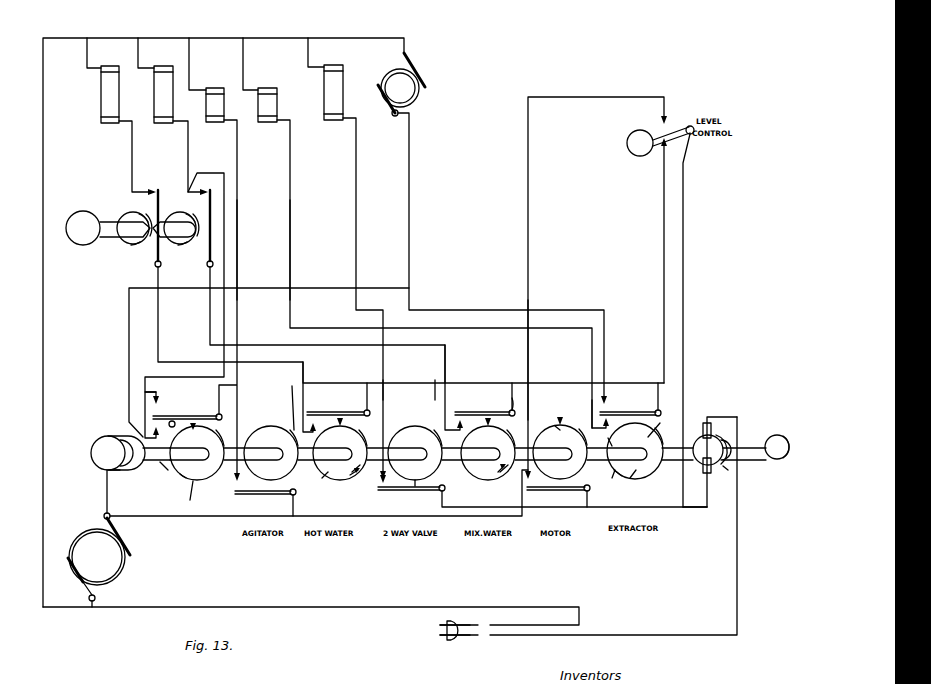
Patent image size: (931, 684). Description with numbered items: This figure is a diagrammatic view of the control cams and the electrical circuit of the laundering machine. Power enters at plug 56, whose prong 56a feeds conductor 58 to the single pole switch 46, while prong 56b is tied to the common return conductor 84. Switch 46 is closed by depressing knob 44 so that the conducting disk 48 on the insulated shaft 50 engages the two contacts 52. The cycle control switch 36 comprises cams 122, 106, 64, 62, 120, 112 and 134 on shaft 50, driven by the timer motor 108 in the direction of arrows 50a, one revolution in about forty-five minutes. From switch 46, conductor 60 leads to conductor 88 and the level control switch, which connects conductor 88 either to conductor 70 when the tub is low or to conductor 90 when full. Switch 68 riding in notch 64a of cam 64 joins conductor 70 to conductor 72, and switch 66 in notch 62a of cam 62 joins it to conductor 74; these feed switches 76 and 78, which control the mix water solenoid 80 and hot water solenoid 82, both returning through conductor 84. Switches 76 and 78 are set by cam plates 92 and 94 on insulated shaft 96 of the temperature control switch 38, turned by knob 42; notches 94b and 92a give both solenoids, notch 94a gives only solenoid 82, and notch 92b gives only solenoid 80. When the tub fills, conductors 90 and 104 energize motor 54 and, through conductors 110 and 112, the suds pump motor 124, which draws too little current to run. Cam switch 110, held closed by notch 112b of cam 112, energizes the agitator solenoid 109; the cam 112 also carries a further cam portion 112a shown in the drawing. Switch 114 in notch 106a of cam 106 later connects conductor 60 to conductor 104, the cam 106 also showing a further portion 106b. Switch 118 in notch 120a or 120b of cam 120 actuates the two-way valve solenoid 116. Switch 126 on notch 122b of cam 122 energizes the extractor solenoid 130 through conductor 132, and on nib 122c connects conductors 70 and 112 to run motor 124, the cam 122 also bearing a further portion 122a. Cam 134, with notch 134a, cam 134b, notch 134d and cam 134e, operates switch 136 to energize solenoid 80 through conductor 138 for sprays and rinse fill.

The cycle control switch 36 is at (698, 413).
The temperature control switch 38 is at (86, 247).
The knob 42 is at (62, 226).
The knob 44 is at (778, 434).
The single pole switch 46 is at (724, 470).
The conducting disk 48 is at (732, 458).
The insulated shaft 50 is at (744, 436).
The arrows 50a is at (433, 484).
The contacts 52 is at (710, 422).
The motor 54 is at (122, 571).
The plug 56 is at (453, 640).
The prong 56a is at (440, 637).
The prong 56b is at (440, 626).
The conductor 58 is at (640, 630).
The conductor 60 is at (690, 512).
The cam 62 is at (322, 474).
The notch 62a is at (370, 420).
The cam 64 is at (474, 478).
The notch 64a is at (516, 402).
The switch 66 is at (348, 414).
The switch 68 is at (470, 414).
The conductor 70 is at (574, 382).
The conductor 72 is at (446, 368).
The conductor 74 is at (304, 369).
The switch 76 is at (210, 185).
The switch 78 is at (148, 190).
The mix water solenoid 80 is at (154, 95).
The hot water solenoid 82 is at (101, 105).
The conductor 84 is at (168, 36).
The conductor 88 is at (685, 203).
The conductor 90 is at (592, 94).
The cam 92 is at (198, 236).
The notch 92a is at (194, 212).
The notch 92b is at (189, 250).
The cam 94 is at (123, 216).
The notch 94a is at (137, 208).
The notch 94b is at (141, 248).
The insulated shaft 96 is at (630, 152).
The conductor 104 is at (326, 498).
The cam 106 is at (538, 426).
The notch 106a is at (572, 430).
The motor lead 106b is at (590, 400).
The timer motor 108 is at (119, 437).
The agitator solenoid 109 is at (222, 96).
The cam switch 110 is at (129, 364).
The cam 112 is at (409, 189).
The hot water control arm 112a is at (294, 396).
The notch 112b is at (244, 418).
The switch 114 is at (566, 496).
The two-way valve solenoid 116 is at (342, 92).
The switch 118 is at (438, 488).
The cam 120 is at (410, 418).
The notch 120a is at (434, 414).
The notch 120b is at (406, 486).
The cam 122 is at (664, 394).
The extractor cam 122a is at (612, 474).
The notch 122b is at (636, 480).
The nib 122c is at (648, 437).
The suds pump motor 124 is at (417, 101).
The switch 126 is at (637, 412).
The extractor solenoid 130 is at (280, 98).
The conductor 132 is at (292, 219).
The cam 134 is at (197, 470).
The notch 134a is at (182, 476).
The cam 134b is at (164, 468).
The notch 134d is at (128, 486).
The cam 134e is at (160, 414).
The switch 136 is at (206, 414).
The conductor 138 is at (238, 214).